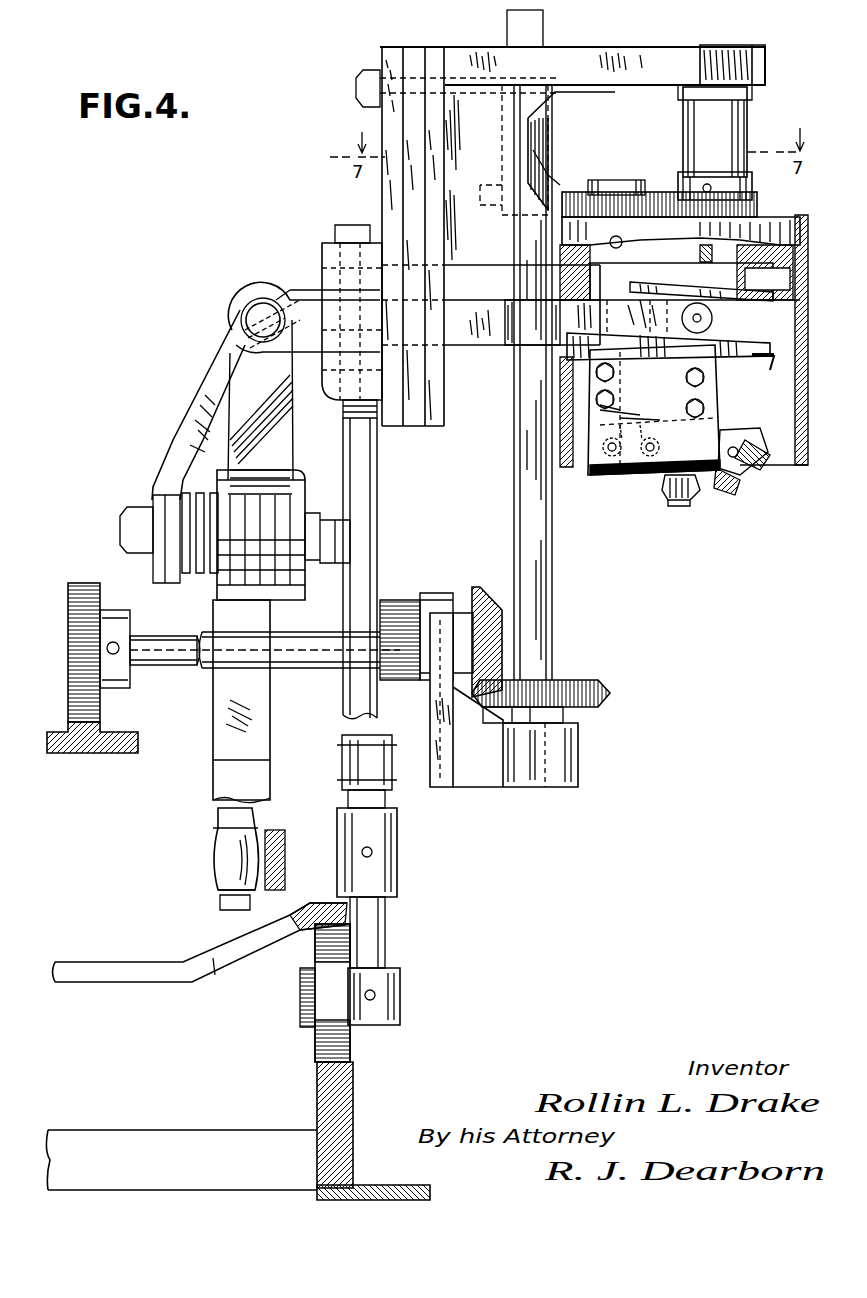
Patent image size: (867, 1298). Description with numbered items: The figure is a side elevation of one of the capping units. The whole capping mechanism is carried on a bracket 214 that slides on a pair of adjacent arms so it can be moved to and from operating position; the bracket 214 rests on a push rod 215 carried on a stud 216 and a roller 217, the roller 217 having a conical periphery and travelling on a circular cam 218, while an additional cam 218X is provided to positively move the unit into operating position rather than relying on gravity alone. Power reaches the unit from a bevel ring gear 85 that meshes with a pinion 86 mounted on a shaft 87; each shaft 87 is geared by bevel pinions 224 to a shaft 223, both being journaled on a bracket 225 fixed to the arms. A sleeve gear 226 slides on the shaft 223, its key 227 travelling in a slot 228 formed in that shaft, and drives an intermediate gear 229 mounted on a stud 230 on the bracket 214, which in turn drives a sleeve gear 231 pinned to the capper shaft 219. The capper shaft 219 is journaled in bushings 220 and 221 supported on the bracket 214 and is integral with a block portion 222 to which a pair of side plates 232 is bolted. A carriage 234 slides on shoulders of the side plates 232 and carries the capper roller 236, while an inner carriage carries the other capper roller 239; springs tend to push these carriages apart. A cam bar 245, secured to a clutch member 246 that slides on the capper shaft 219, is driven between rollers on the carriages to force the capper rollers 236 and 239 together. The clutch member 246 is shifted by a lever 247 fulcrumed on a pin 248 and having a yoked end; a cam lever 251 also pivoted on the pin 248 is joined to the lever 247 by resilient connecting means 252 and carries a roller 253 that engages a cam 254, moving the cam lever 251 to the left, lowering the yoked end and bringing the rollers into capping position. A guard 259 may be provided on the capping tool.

The bracket 214 is at (600, 60).
The bushing 220 is at (718, 45).
The sleeve gear 226 is at (550, 120).
The sleeve gear 231 is at (700, 118).
The capper shaft 219 is at (740, 123).
The key 227 is at (553, 175).
The stud 230 is at (612, 180).
The intermediate gear 229 is at (665, 180).
The bushing 221 is at (680, 259).
The guard 259 is at (805, 465).
The cam bar 245 is at (625, 350).
The clutch member 246 is at (764, 371).
The block portion 222 is at (720, 412).
The side plates 232 is at (634, 460).
The roller 239 is at (668, 495).
The carriage 234 is at (750, 446).
The roller 236 is at (725, 490).
The slot 228 is at (545, 345).
The pin 248 is at (242, 320).
The lever 247 is at (178, 460).
The resilient connecting means 252 is at (190, 578).
The push rod 215 is at (377, 494).
The pinion 86 is at (80, 583).
The shaft 87 is at (165, 665).
The bevel ring gear 85 is at (120, 753).
The cam lever 251 is at (270, 760).
The roller 253 is at (220, 862).
The cam 254 is at (285, 850).
The additional cam 218X is at (200, 952).
The roller 217 is at (330, 1028).
The stud 216 is at (380, 1022).
The cam 218 is at (353, 1102).
The bevel pinions 224 is at (595, 680).
The bracket 225 is at (445, 775).
The shaft 223 is at (552, 608).